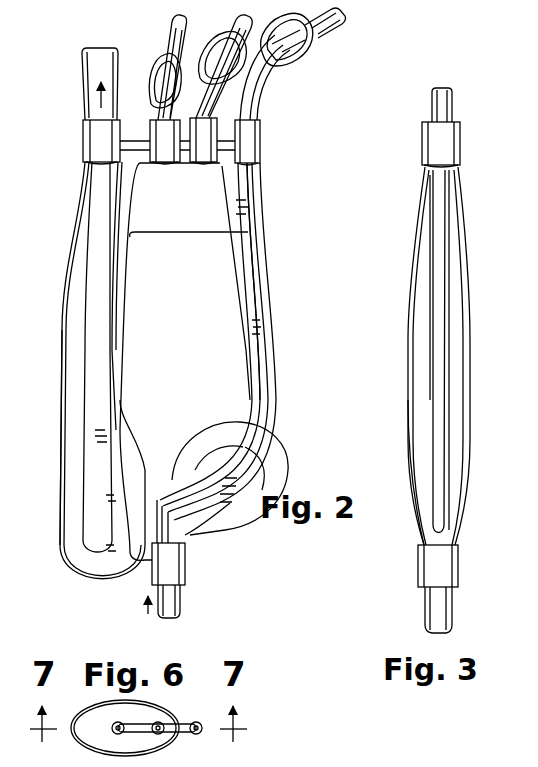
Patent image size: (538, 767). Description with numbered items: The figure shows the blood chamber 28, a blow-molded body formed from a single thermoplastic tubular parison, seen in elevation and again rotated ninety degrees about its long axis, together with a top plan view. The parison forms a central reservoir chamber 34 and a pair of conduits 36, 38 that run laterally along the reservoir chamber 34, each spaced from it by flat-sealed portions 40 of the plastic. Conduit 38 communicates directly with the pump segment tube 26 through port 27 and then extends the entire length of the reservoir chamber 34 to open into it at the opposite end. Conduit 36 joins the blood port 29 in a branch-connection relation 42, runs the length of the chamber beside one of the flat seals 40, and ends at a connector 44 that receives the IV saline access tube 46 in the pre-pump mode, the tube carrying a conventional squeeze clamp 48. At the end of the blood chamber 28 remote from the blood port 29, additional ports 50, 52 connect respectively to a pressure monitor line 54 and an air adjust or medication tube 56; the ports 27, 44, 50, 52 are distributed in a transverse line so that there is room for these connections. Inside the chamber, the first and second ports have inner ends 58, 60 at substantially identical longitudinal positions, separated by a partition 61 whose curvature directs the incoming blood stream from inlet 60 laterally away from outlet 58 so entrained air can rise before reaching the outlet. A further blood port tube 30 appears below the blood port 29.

In FIG. 2, the pump segment tube 26 is at (90, 68).
In FIG. 2, the port 27 is at (98, 136).
In FIG. 2, the blood chamber 28 is at (60, 455).
In FIG. 3, the blood chamber 28 is at (470, 352).
In FIG. 2, the blood port 29 is at (185, 565).
In FIG. 3, the blood port 29 is at (450, 562).
In FIG. 2, the outlet port tube 30 is at (181, 605).
In FIG. 3, the outlet port tube 30 is at (448, 608).
In FIG. 2, the reservoir chamber 34 is at (188, 336).
In FIG. 2, the conduit 36 is at (252, 247).
In FIG. 3, the conduit 36 is at (440, 254).
In FIG. 2, the conduit 38 is at (92, 230).
In FIG. 2, the flat-sealed portions 40 is at (100, 320).
In FIG. 2, the branch-connection relation 42 is at (205, 538).
In FIG. 2, the connector 44 is at (258, 138).
In FIG. 3, the connector 44 is at (457, 150).
In FIG. 2, the IV saline access tube 46 is at (328, 26).
In FIG. 2, the squeeze clamp 48 is at (306, 52).
In FIG. 2, the port 50 is at (158, 135).
In FIG. 2, the port 52 is at (216, 130).
In FIG. 2, the pressure monitor line 54 is at (174, 35).
In FIG. 2, the air adjust or medication tube 56 is at (242, 14).
In FIG. 2, the inner end 58 is at (115, 580).
In FIG. 2, the inner end 60 is at (250, 464).
In FIG. 2, the partition 61 is at (250, 432).